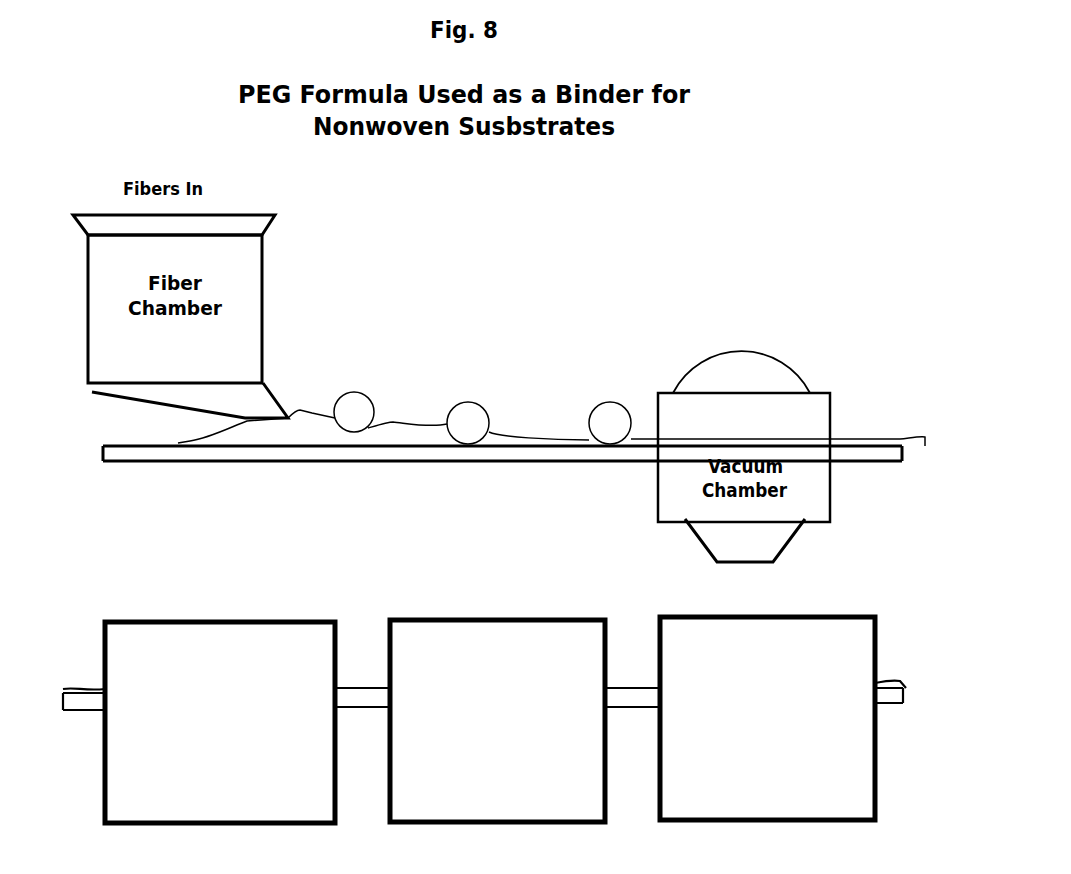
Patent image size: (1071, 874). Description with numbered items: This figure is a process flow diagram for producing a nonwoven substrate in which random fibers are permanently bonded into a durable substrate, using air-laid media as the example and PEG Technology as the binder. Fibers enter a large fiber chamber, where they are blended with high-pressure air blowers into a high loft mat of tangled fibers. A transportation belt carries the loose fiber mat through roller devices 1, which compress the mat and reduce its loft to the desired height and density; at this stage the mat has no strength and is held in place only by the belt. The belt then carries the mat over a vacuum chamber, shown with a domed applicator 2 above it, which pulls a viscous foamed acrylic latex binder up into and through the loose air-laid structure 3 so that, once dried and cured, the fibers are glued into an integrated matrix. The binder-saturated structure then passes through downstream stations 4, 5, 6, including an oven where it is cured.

The roller devices 1 is at (482, 418).
The binder spray hood 2 is at (715, 360).
The nonwoven substrate web 3 is at (873, 443).
The first process station 4 is at (220, 722).
The second process station 5 is at (497, 721).
The third process station 6 is at (767, 718).